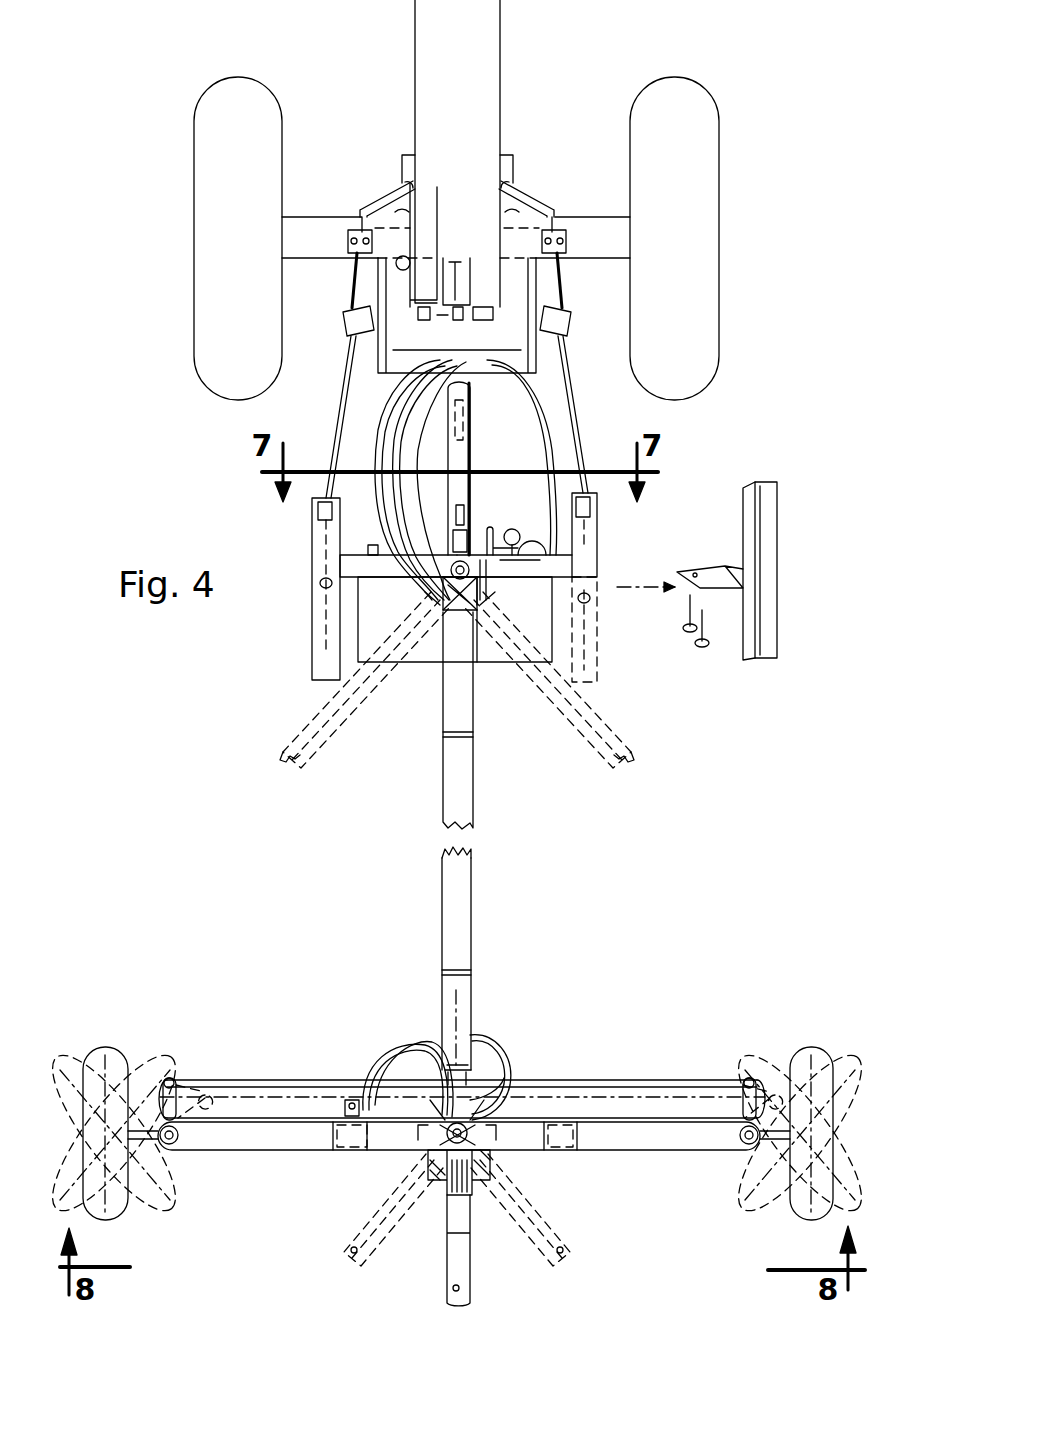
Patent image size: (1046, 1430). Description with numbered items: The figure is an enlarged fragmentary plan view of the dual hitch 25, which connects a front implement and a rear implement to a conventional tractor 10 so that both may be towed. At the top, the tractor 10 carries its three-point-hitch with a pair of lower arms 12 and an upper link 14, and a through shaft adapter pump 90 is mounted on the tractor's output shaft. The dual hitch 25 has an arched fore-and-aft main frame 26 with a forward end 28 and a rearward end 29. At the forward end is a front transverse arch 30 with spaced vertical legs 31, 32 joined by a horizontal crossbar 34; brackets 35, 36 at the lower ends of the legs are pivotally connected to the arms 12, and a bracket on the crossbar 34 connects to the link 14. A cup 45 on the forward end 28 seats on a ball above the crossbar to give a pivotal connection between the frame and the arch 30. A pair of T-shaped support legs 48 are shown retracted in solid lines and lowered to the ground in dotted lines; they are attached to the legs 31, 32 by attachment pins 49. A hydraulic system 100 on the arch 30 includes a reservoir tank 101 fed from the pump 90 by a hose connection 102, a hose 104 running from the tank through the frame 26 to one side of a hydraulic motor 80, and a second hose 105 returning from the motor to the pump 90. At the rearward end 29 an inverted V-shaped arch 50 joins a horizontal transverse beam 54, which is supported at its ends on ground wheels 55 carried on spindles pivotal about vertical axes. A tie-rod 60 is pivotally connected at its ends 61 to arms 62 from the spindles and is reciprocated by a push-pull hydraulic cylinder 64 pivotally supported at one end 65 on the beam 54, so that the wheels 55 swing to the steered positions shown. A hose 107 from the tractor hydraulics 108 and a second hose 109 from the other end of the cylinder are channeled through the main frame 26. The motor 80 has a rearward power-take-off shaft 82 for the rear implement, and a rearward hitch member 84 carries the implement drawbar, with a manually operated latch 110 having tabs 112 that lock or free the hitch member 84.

The tractor 10 is at (476, 53).
The hydraulics 108 is at (432, 185).
The lower arms 12 is at (355, 352).
The through shaft adapter pump 90 is at (486, 380).
The hose connection 102 is at (382, 410).
The second hose 109 is at (390, 430).
The hose 107 is at (420, 400).
The second hose 105 is at (553, 430).
The upper link 14 is at (463, 447).
The front transverse arch 30 is at (443, 586).
The bracket 35 is at (312, 535).
The bracket 36 is at (596, 535).
The leg 31 is at (312, 565).
The leg 32 is at (597, 565).
The horizontal crossbar 34 is at (392, 565).
The cup 45 is at (440, 548).
The hydraulic system 100 is at (536, 528).
The T-shaped support legs 48 is at (755, 518).
The attachment pins 49 is at (688, 634).
The forward end 28 is at (455, 690).
The reservoir tank 101 is at (488, 655).
The dual hitch 25 is at (420, 774).
The arched main frame 26 is at (460, 920).
The rearward end 29 is at (460, 985).
The hydraulic motor 80 is at (480, 1012).
The inverted V-shaped arch 50 is at (459, 1116).
The tie-rod 60 is at (592, 1078).
The transverse beam 54 is at (640, 1140).
The arms 62 is at (178, 1082).
The ends 61 is at (745, 1078).
The ground wheels 55 is at (140, 1035).
The push-pull hydraulic cylinder 64 is at (388, 1140).
The tabs 112 is at (510, 1168).
The end 65 is at (360, 1098).
The hose 104 is at (500, 1070).
The manually operated latch 110 is at (522, 1116).
The hitch member 84 is at (472, 1245).
The power-take-off shaft 82 is at (438, 1215).